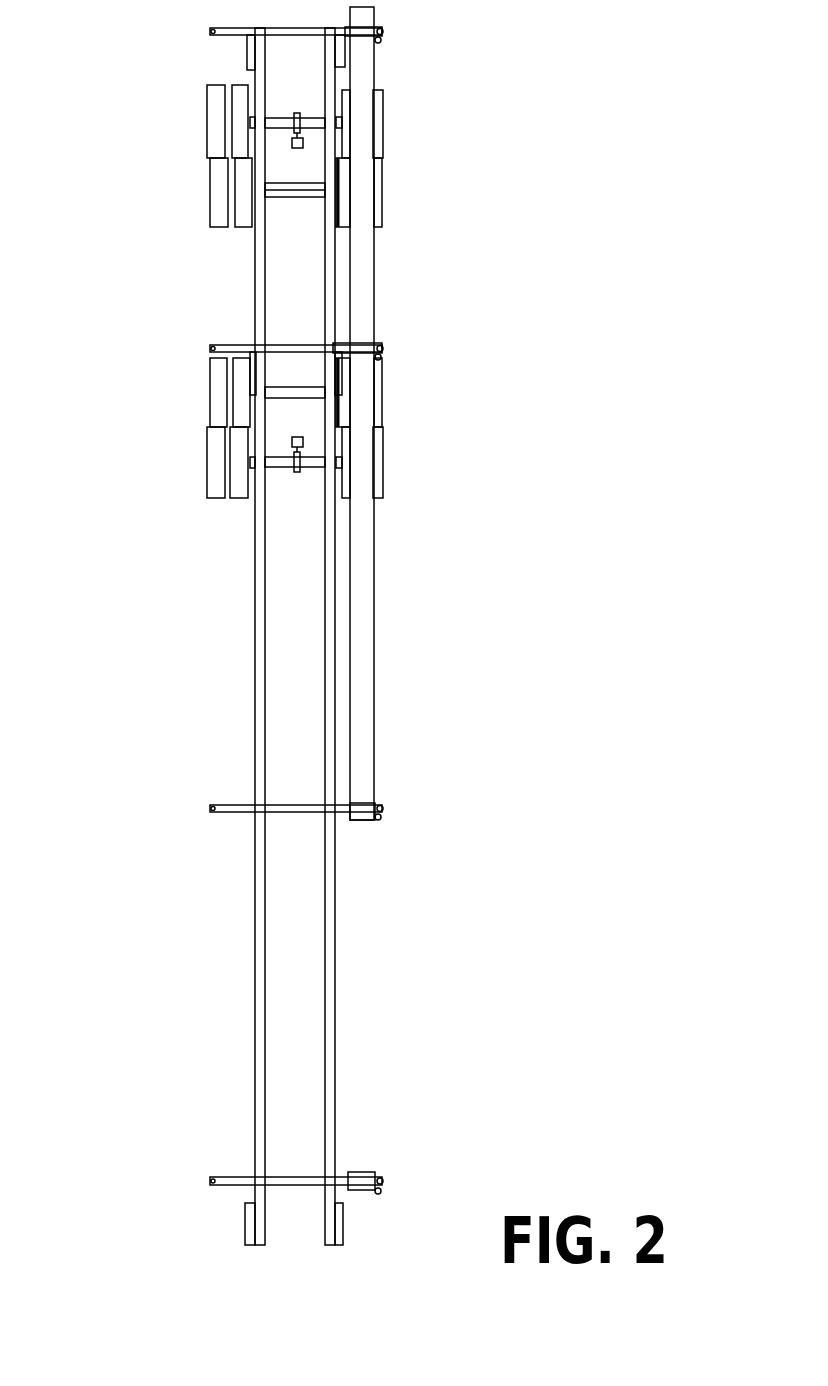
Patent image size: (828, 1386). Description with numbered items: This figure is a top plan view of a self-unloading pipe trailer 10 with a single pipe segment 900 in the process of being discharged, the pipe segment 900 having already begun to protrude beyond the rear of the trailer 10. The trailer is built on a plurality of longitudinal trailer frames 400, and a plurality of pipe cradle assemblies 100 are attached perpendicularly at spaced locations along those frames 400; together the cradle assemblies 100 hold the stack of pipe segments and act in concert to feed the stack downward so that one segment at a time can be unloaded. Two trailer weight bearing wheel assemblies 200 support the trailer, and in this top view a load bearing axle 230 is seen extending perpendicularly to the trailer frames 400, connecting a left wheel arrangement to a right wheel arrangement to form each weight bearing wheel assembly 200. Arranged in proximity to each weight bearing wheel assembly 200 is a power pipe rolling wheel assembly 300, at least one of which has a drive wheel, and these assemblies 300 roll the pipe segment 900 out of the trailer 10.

The self-unloading pipe trailer 10 is at (585, 57).
The pipe cradle assemblies 100 is at (166, 27).
The trailer weight bearing wheel assemblies 200 is at (166, 183).
The load bearing axle 230 is at (290, 197).
The power pipe rolling wheel assemblies 300 is at (166, 117).
The trailer frames 400 is at (223, 1033).
The pipe segment 900 is at (373, 673).